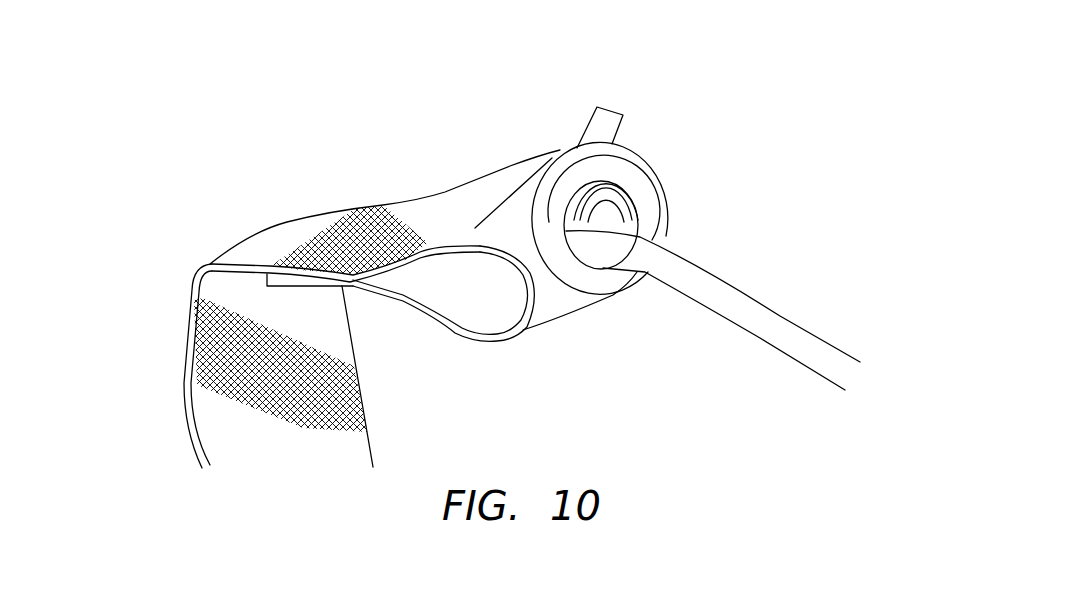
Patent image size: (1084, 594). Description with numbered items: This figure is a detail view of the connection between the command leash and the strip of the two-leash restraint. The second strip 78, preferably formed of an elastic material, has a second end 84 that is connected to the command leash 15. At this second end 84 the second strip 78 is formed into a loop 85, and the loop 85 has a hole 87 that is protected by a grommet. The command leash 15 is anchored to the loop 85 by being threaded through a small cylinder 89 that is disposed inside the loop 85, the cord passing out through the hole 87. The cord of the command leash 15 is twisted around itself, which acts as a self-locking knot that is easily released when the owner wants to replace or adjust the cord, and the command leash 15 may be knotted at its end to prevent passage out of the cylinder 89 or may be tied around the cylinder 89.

The command leash 15 is at (610, 120).
The second strip 78 is at (193, 285).
The second end 84 is at (566, 145).
The loop 85 is at (462, 328).
The hole 87 is at (582, 215).
The small cylinder 89 is at (600, 208).